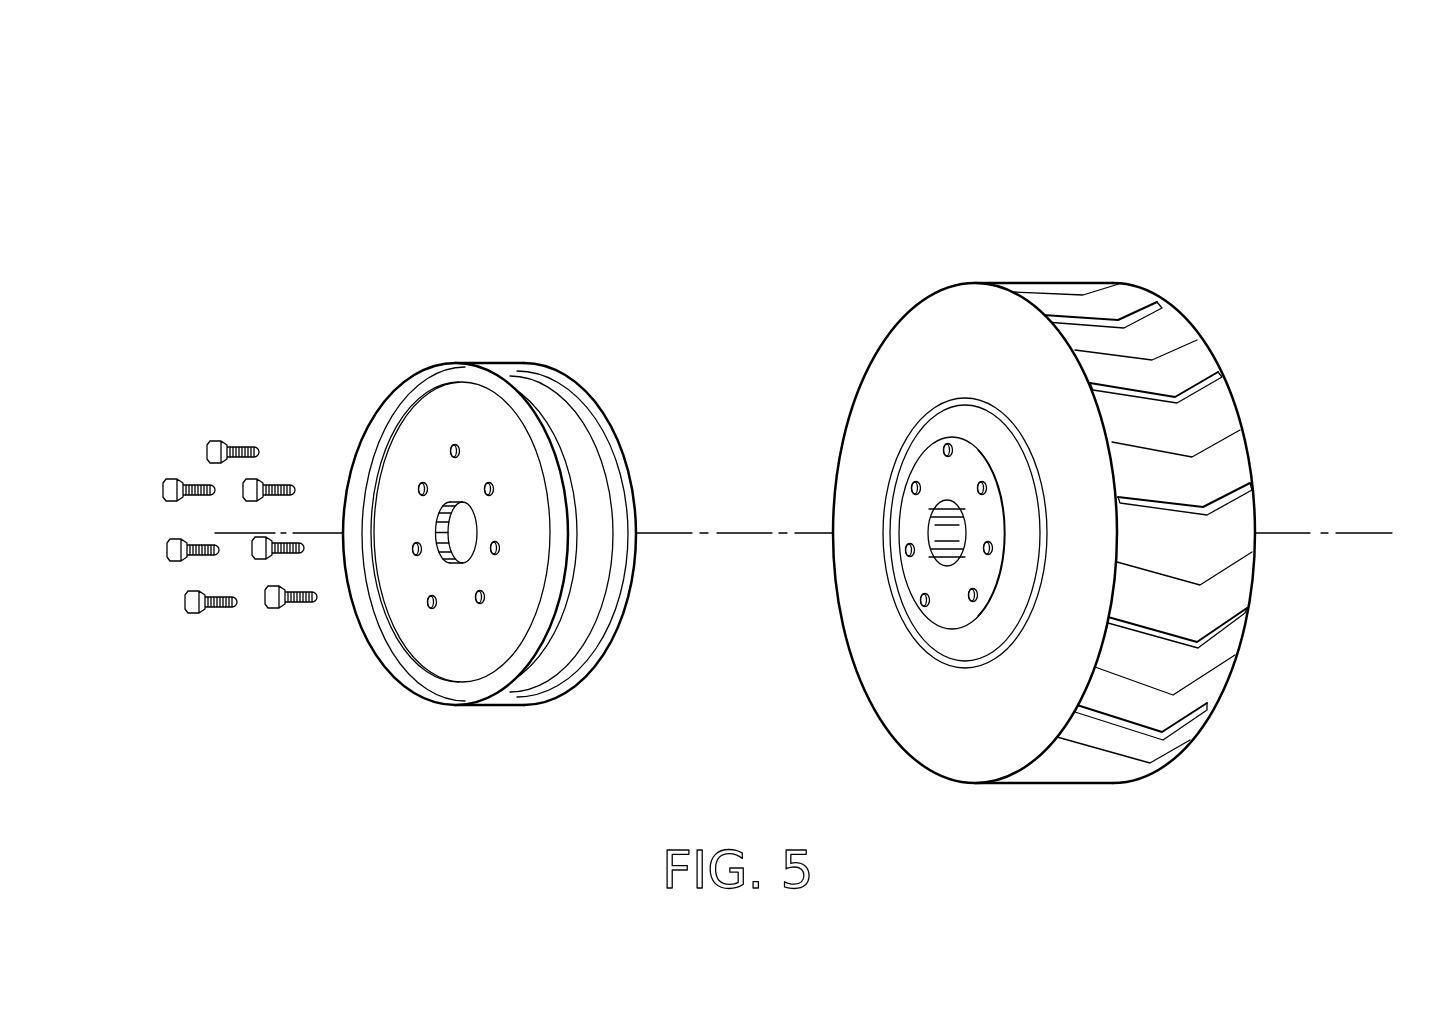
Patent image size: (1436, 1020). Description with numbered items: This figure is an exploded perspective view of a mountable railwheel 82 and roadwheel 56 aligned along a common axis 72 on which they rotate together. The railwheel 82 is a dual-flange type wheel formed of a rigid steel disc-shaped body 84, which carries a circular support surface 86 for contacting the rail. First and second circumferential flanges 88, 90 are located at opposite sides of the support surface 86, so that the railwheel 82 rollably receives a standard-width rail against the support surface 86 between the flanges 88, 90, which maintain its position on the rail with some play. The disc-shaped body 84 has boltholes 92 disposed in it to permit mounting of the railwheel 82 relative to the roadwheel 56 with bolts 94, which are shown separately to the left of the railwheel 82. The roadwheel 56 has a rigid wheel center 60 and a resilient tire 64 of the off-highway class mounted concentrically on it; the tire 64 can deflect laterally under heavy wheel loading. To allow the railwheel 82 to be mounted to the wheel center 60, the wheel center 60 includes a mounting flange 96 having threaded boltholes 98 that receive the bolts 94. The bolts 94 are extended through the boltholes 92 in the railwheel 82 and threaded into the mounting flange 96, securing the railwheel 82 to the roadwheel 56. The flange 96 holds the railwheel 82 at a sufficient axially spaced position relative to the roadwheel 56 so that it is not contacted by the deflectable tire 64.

The roadwheel 56 is at (1007, 445).
The rigid wheel center 60 is at (1007, 457).
The tire 64 is at (1017, 320).
The common axis 72 is at (824, 535).
The railwheel 82 is at (502, 453).
The disc-shaped body 84 is at (430, 418).
The support surface 86 is at (582, 445).
The first circumferential flange 88 is at (447, 377).
The second circumferential flange 90 is at (568, 380).
The boltholes 92 is at (480, 603).
The bolts 94 is at (168, 482).
The mounting flange 96 is at (926, 574).
The threaded boltholes 98 is at (921, 604).